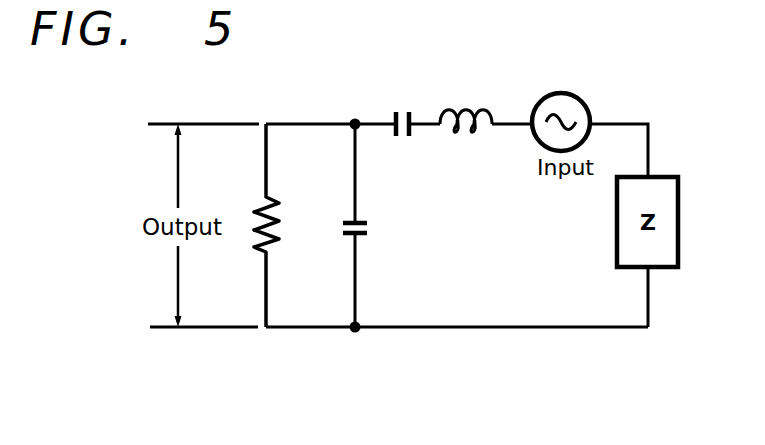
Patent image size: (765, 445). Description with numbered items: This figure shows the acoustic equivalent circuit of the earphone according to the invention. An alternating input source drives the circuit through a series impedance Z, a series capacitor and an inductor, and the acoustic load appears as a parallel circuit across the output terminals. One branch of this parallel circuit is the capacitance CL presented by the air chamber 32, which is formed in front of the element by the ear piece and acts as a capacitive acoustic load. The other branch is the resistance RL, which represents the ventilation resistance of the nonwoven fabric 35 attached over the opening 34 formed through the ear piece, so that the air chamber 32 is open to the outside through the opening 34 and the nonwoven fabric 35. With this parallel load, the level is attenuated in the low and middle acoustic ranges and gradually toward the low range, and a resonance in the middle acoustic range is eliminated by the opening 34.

The air chamber 32 is at (371, 227).
The opening 34 is at (333, 251).
The nonwoven fabric 35 is at (283, 228).